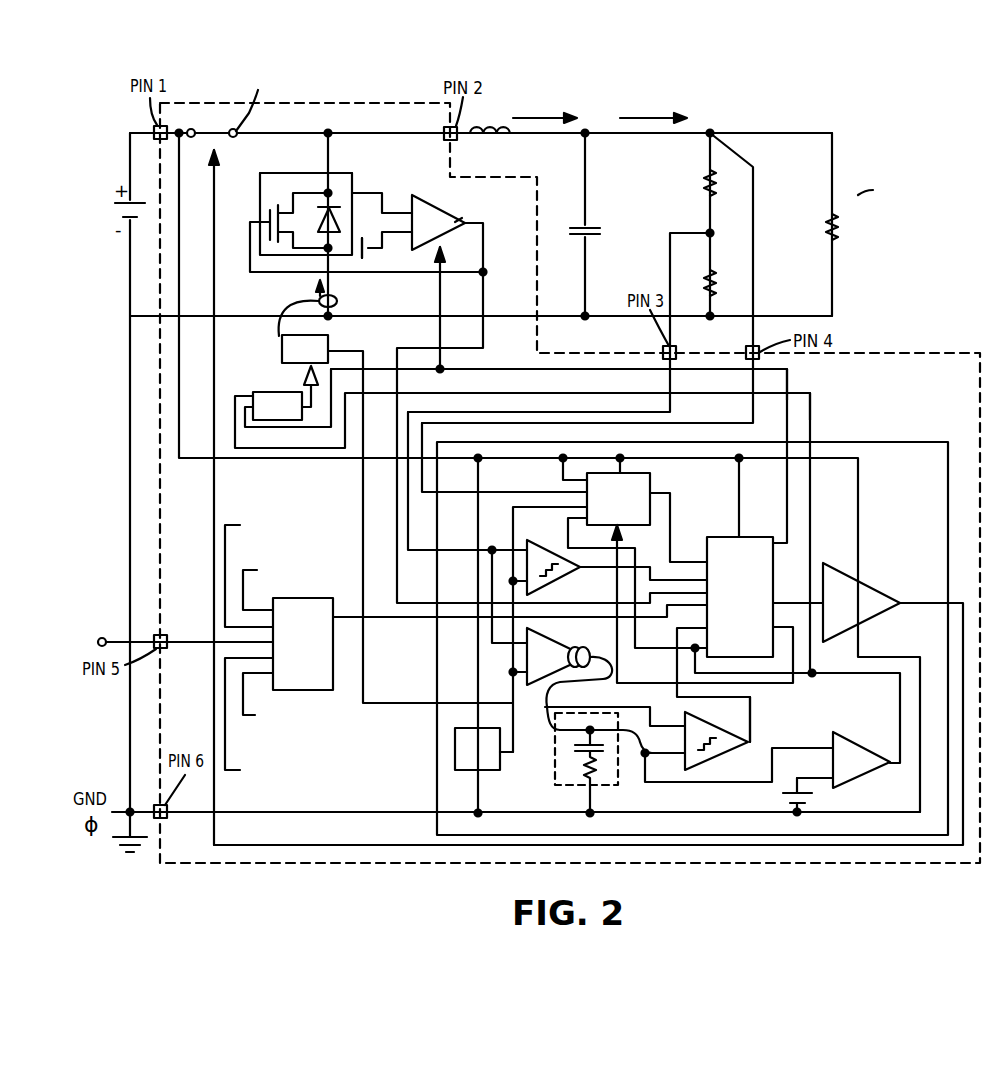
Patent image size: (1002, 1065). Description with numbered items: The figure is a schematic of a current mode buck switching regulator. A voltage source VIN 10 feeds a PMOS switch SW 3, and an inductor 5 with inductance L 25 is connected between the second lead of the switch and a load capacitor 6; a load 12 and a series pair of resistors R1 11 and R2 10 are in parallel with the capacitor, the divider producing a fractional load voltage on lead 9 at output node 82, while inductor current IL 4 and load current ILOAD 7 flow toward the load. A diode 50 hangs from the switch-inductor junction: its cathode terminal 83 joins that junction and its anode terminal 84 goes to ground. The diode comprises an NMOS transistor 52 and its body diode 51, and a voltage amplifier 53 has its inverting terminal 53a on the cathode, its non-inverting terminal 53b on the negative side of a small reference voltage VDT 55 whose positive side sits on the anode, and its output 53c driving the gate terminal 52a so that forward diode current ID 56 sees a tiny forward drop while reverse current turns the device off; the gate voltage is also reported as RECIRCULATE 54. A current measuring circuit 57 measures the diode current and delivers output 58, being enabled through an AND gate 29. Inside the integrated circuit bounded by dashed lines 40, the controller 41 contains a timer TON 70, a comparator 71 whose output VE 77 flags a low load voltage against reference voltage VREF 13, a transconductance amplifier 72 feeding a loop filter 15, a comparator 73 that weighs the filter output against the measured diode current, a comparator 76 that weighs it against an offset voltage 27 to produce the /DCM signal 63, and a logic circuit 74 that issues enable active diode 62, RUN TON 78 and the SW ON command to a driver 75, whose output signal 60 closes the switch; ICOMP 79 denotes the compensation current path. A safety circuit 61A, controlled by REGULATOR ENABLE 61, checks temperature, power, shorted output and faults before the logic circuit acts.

The dashed lines 40 is at (205, 862).
The switch SW 3 is at (227, 97).
The output signal 60 is at (214, 230).
The NMOS transistor 52 is at (273, 207).
The gate terminal 52a is at (259, 220).
The diode 50 is at (279, 172).
The body diode 51 is at (339, 192).
The cathode terminal 83 is at (368, 193).
The voltage amplifier 53 is at (442, 205).
The inverting terminal 53a is at (400, 210).
The non-inverting terminal 53b is at (384, 238).
The output 53c is at (462, 218).
The RECIRCULATE 54 is at (475, 223).
The reference voltage VDT 55 is at (370, 260).
The anode terminal 84 is at (358, 256).
The current measuring circuit output 58 is at (345, 348).
The diode current ID 56 is at (316, 290).
The current measuring circuit 57 is at (282, 358).
The AND gate 29 is at (298, 420).
The controller 41 is at (880, 441).
The enable active diode 62 is at (787, 385).
The /DCM signal 63 is at (810, 408).
The timer circuit TON 70 is at (655, 483).
The comparator 71 is at (533, 538).
The output VE 77 is at (608, 570).
The logic circuit 74 is at (726, 536).
The driver 75 is at (870, 587).
The transconductance amplifier 72 is at (560, 632).
The loop filter 15 is at (570, 787).
The reference voltage VREF 13 is at (503, 762).
The comparator 73 is at (730, 752).
The ICOMP 79 is at (750, 720).
The RUN TON 78 is at (795, 683).
The comparator 76 is at (870, 745).
The offset voltage 27 is at (815, 805).
The REGULATOR ENABLE signal 61 is at (100, 638).
The safety circuit 61A is at (334, 655).
The voltage source VIN / resistor R2 10 is at (773, 281).
The inductor L 25 is at (366, 132).
The inductor 5 is at (500, 120).
The inductor current IL 4 is at (545, 102).
The load current ILOAD 7 is at (653, 104).
The capacitor 6 is at (598, 226).
The resistor R1 11 is at (754, 192).
The lead 9 is at (668, 260).
The output node 82 is at (797, 132).
The load 12 is at (880, 224).